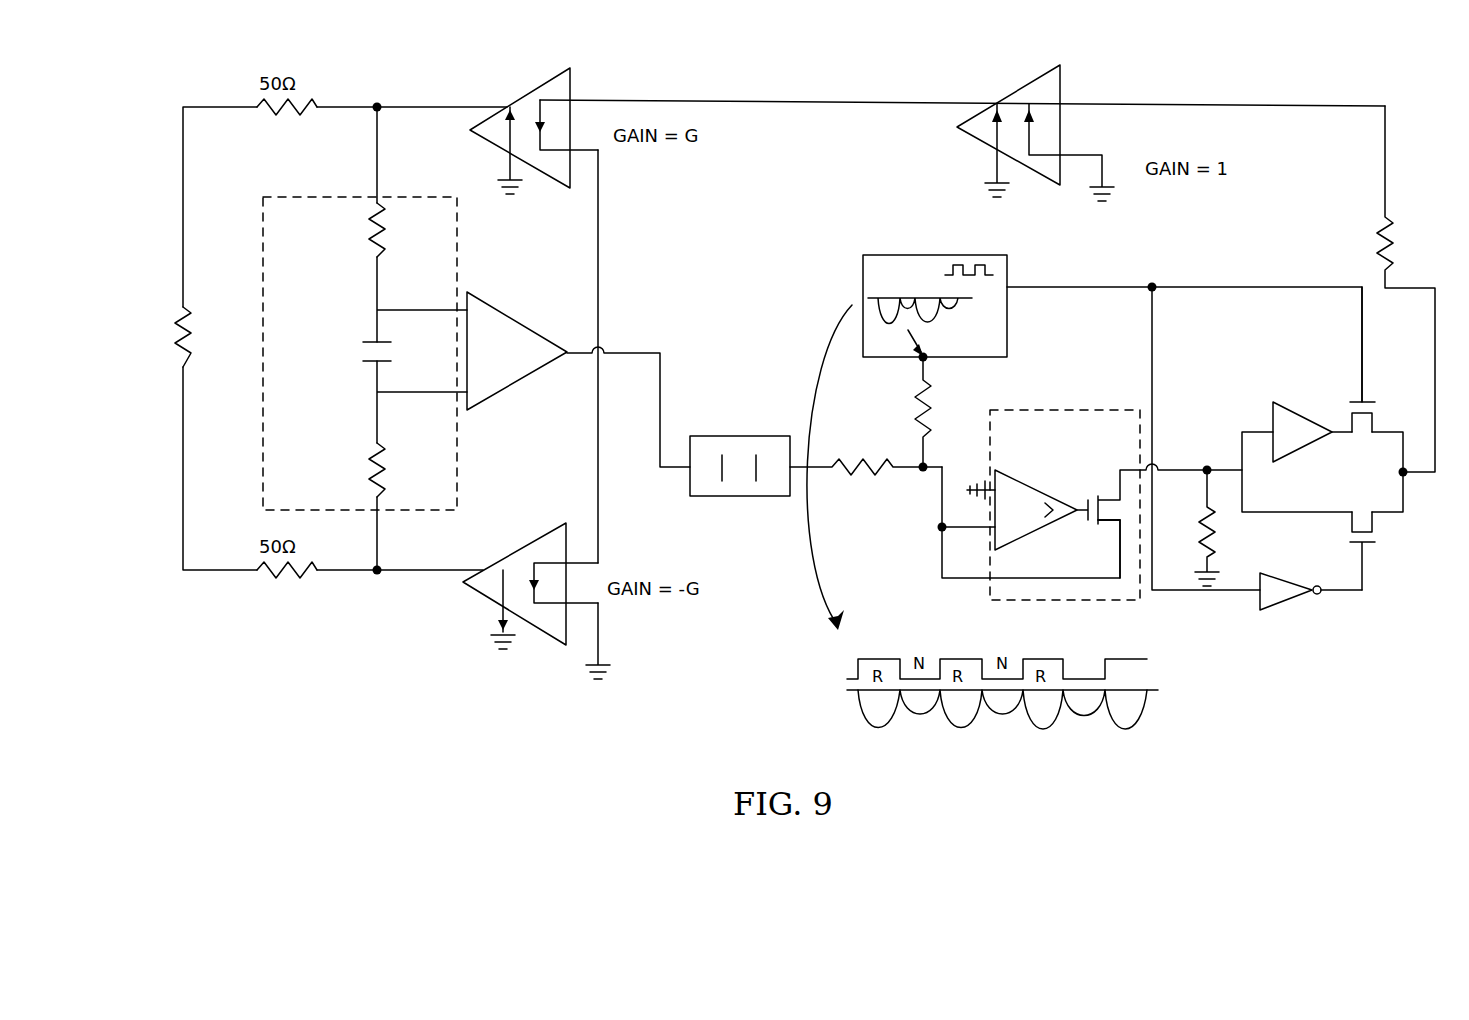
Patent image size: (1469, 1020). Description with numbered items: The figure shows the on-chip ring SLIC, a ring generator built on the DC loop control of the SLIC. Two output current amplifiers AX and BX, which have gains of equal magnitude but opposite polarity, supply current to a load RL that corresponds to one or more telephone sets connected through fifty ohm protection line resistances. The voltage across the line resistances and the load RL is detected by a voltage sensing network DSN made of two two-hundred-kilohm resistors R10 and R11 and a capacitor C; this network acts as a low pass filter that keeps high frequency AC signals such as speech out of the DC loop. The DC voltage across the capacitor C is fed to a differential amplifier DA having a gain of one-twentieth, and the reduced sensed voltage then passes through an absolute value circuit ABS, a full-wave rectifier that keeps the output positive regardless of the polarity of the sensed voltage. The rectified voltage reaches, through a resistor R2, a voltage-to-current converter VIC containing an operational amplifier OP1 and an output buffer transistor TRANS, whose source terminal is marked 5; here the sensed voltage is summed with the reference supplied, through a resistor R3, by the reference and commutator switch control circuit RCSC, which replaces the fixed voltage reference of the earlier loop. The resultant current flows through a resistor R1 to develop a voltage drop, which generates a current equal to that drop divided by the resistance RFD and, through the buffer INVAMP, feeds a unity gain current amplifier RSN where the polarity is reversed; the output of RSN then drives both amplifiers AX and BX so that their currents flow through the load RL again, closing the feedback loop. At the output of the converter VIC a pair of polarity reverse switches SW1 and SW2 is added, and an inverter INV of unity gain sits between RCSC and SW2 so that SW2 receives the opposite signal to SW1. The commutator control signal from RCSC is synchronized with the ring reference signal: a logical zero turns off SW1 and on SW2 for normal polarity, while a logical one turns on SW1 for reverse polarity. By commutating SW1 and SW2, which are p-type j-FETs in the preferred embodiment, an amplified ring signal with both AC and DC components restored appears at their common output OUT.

The load RL is at (199, 337).
The voltage sensing network DSN is at (263, 236).
The resistor R10 is at (379, 230).
The capacitor C is at (385, 353).
The resistor R11 is at (379, 470).
The differential amplifier DA is at (510, 396).
The output current amplifier AX is at (534, 131).
The output current amplifier BX is at (530, 586).
The unity gain current amplifier RSN is at (1035, 133).
The resistance RFD is at (1409, 289).
The absolute value circuit ABS is at (740, 497).
The resistor R2 is at (866, 453).
The resistor R3 is at (942, 412).
The reference and commutator switch control circuit RCSC is at (890, 255).
The voltage-to-current converter VIC is at (1063, 410).
The operational amplifier OP1 is at (1020, 481).
The output buffer transistor TRANS is at (1104, 523).
The transistor source terminal 5 is at (1117, 549).
The resistor R1 is at (1223, 528).
The inverting amplifier INVAMP is at (1300, 452).
The polarity reverse switch SW1 is at (1363, 377).
The polarity reverse switch SW2 is at (1363, 540).
The common output OUT is at (1405, 482).
The inverter INV is at (1278, 608).